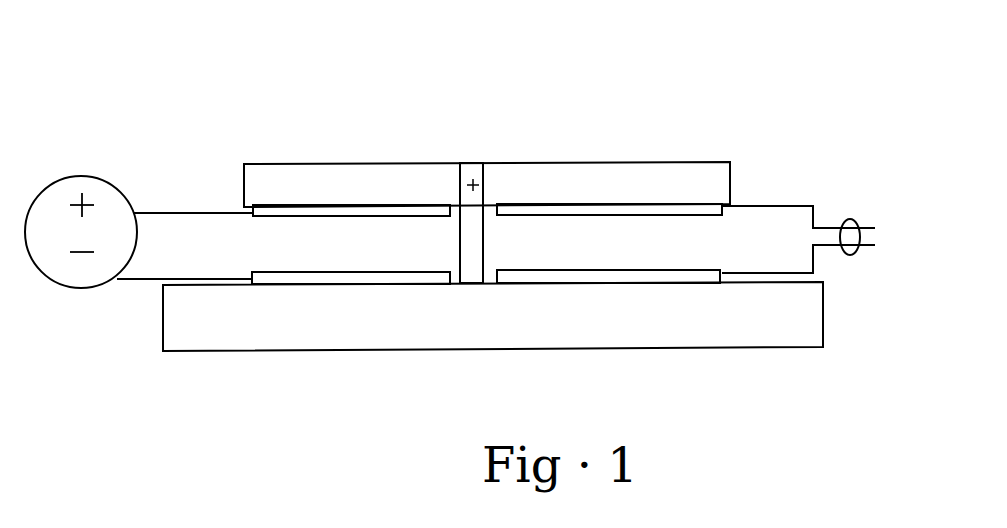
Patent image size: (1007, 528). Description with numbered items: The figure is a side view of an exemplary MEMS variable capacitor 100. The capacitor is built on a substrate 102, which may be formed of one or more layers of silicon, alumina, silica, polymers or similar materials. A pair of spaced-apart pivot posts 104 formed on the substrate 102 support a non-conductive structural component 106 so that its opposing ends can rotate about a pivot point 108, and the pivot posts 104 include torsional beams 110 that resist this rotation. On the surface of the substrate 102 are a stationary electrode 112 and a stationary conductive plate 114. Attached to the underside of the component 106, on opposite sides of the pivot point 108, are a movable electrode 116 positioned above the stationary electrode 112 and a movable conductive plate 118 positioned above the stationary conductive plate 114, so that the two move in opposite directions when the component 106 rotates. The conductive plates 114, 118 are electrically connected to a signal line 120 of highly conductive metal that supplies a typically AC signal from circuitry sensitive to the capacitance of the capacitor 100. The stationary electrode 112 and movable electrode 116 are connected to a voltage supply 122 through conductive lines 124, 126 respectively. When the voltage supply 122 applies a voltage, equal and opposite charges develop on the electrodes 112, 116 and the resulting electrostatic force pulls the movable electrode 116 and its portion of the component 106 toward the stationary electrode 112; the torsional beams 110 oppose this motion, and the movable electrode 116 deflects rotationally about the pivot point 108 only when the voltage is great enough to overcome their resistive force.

The MEMS variable capacitor 100 is at (747, 102).
The substrate 102 is at (825, 312).
The pivot posts 104 is at (484, 242).
The structural component 106 is at (732, 182).
The pivot point 108 is at (472, 176).
The torsional beams 110 is at (458, 197).
The stationary electrode 112 is at (368, 270).
The stationary conductive plate 114 is at (652, 270).
The movable electrode 116 is at (275, 217).
The movable conductive plate 118 is at (577, 213).
The signal line 120 is at (850, 219).
The voltage supply 122 is at (78, 176).
The conductive line 124 is at (163, 212).
The conductive line 126 is at (147, 281).